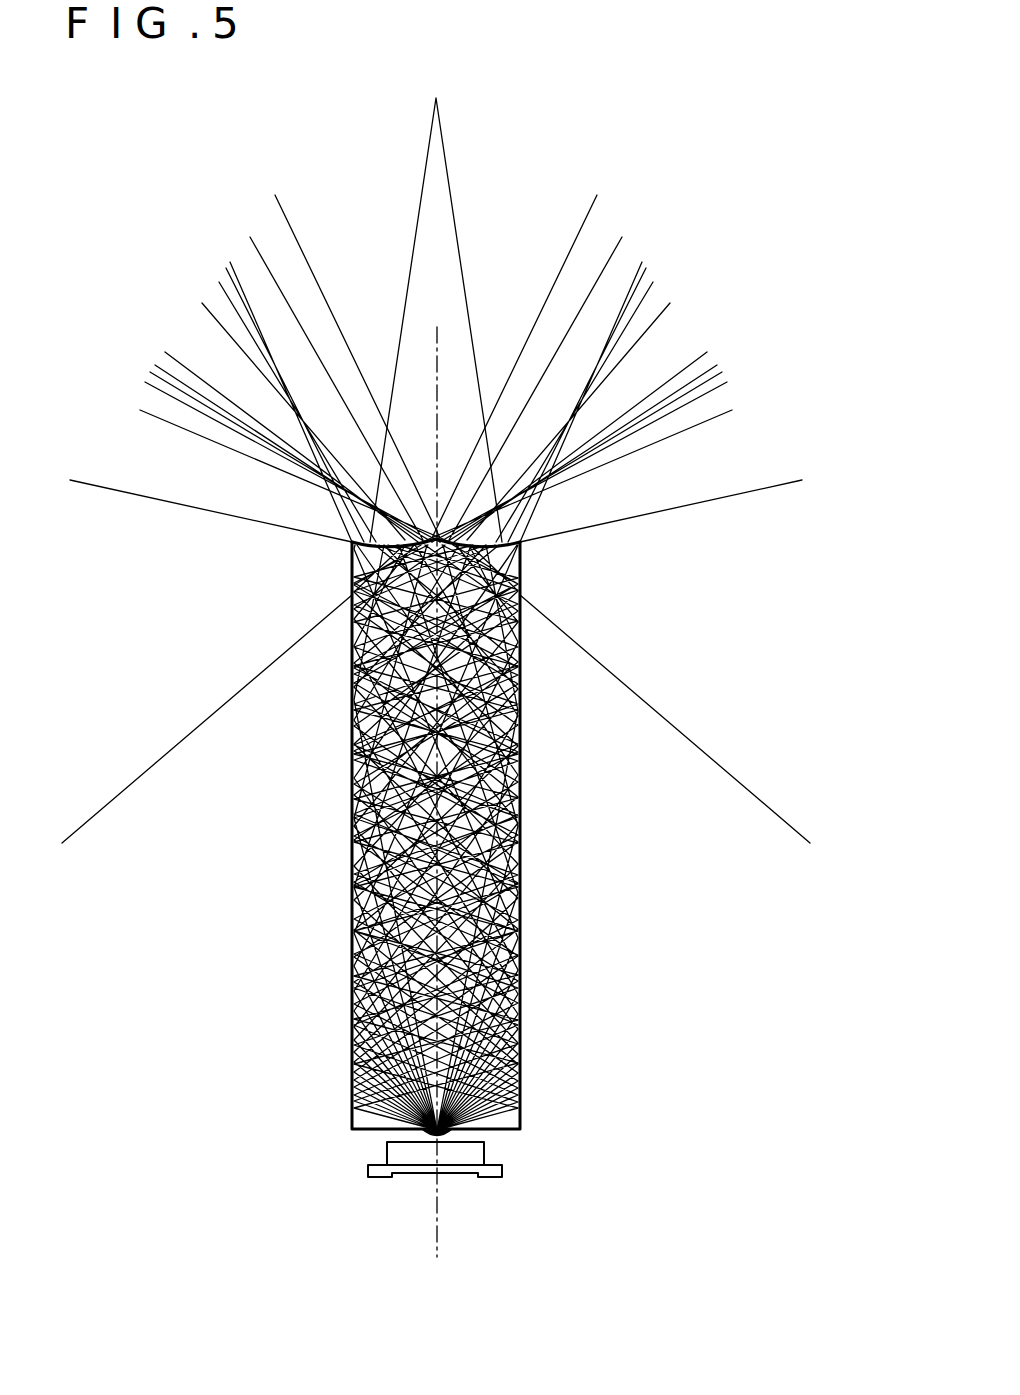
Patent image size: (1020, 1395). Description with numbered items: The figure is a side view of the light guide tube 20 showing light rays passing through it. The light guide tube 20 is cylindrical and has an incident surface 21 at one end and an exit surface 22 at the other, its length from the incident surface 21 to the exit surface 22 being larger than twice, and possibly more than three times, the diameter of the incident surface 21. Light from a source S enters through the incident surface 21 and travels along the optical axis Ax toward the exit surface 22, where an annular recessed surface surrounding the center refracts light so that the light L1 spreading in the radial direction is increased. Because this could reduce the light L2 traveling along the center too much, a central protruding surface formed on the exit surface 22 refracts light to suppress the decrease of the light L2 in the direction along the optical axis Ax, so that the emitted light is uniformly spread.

The light guide tube 20 is at (551, 926).
The incident surface 21 is at (362, 1131).
The exit surface 22 is at (523, 537).
The light source S is at (470, 1150).
The optical axis Ax is at (439, 811).
The light spreading in the radial direction L1 is at (270, 186).
The light in the direction along the center L2 is at (355, 102).